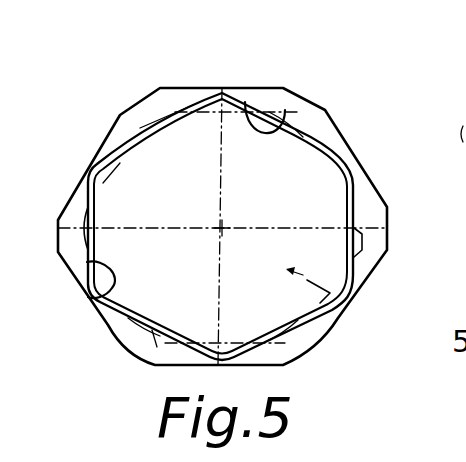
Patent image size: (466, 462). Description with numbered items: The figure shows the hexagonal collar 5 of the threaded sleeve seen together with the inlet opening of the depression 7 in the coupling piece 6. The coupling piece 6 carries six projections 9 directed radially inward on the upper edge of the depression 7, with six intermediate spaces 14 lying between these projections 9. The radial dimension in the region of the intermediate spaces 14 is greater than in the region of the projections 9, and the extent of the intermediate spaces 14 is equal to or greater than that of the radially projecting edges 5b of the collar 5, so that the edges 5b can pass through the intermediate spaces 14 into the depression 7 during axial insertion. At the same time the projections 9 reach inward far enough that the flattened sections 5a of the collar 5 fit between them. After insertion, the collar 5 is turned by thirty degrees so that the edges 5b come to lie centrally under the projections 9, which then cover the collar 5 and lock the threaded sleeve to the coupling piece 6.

The collar 5 is at (357, 183).
The flattened sections 5a is at (352, 262).
The edges 5b is at (106, 167).
The coupling piece 6 is at (340, 117).
The depression 7 is at (350, 313).
The projections 9 is at (93, 218).
The intermediate spaces 14 is at (272, 134).